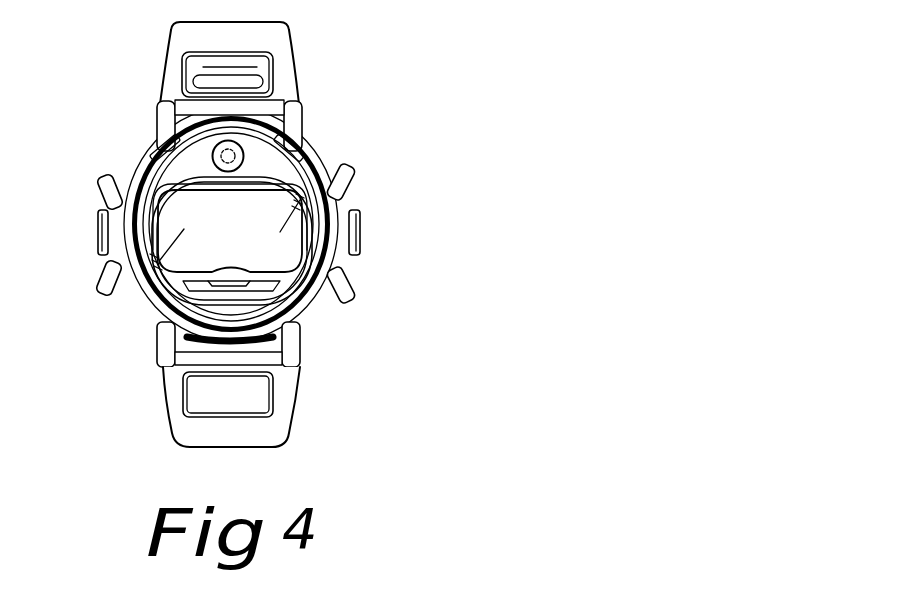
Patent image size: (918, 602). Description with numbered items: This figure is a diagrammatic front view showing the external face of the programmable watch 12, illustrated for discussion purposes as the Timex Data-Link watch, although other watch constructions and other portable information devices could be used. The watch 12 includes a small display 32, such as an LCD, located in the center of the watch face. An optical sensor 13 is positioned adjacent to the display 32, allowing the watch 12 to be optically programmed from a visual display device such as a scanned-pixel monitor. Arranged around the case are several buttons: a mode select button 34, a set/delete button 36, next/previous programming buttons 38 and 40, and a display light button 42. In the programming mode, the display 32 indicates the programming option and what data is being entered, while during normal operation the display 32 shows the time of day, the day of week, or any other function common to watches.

The programmable watch 12 is at (428, 57).
The optical sensor 13 is at (244, 152).
The display 32 is at (222, 193).
The mode select button 34 is at (362, 235).
The set/delete button 36 is at (352, 288).
The next/previous programming button 38 is at (352, 178).
The next/previous programming button 40 is at (103, 283).
The display light button 42 is at (102, 192).